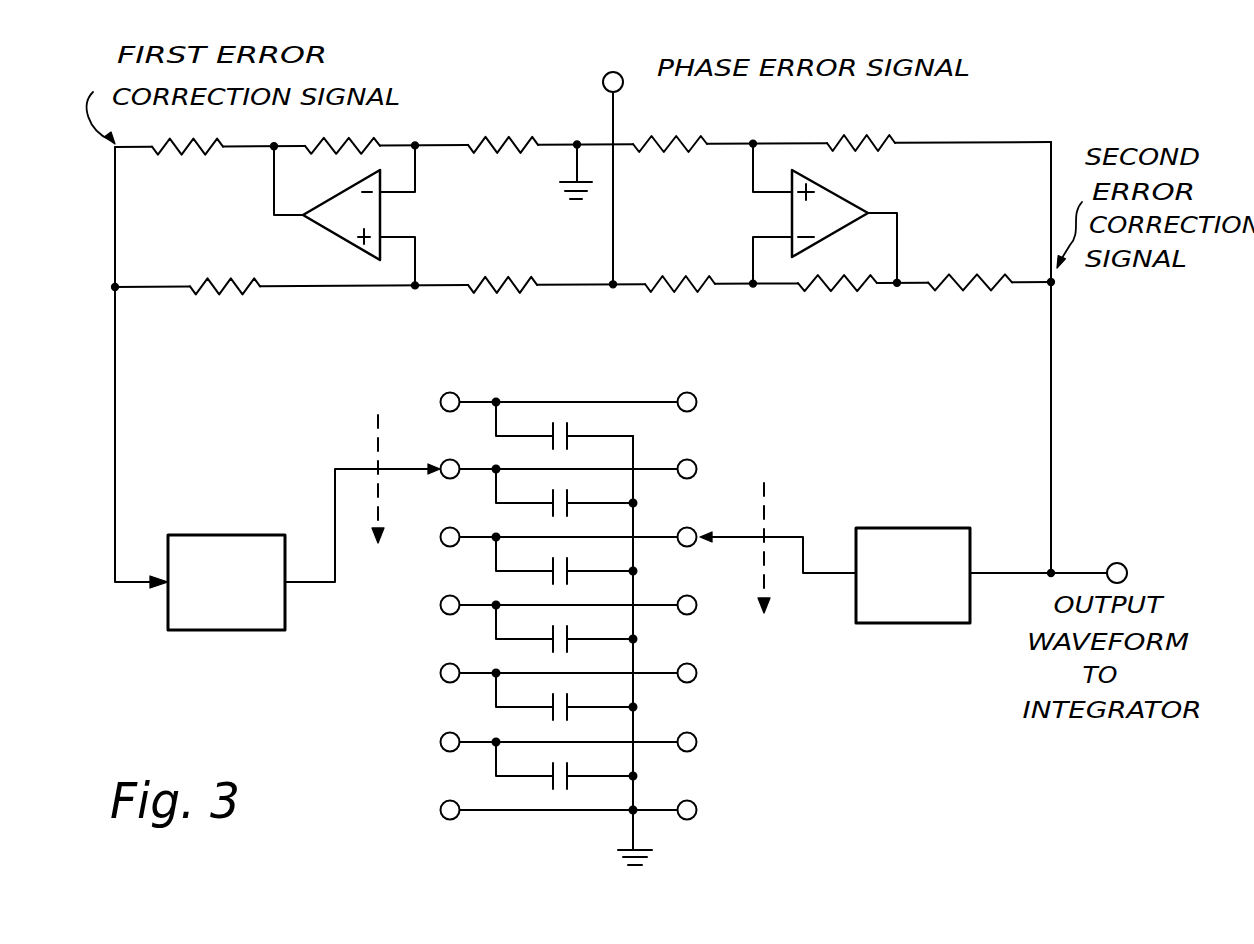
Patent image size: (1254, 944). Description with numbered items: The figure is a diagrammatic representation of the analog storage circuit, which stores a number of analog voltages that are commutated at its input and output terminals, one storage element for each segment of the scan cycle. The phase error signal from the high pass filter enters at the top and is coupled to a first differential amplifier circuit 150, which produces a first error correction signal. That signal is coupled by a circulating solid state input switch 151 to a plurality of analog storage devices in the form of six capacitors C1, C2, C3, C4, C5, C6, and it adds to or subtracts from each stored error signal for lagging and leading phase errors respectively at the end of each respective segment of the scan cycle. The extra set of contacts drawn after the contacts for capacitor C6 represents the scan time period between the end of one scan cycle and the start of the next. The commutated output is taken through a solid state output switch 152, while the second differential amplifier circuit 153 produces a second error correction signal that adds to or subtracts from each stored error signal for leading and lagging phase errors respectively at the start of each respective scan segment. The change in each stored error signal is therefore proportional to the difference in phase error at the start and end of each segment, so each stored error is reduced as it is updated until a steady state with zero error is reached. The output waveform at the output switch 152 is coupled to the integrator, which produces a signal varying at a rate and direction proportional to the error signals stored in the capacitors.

The first differential amplifier circuit 150 is at (424, 126).
The solid state input switch 151 is at (250, 535).
The solid state output switch 152 is at (928, 528).
The differential amplifier circuit 153 is at (961, 120).
The capacitor C1 is at (563, 424).
The capacitor C2 is at (565, 491).
The capacitor C3 is at (565, 559).
The capacitor C4 is at (565, 627).
The capacitor C5 is at (565, 695).
The capacitor C6 is at (565, 764).